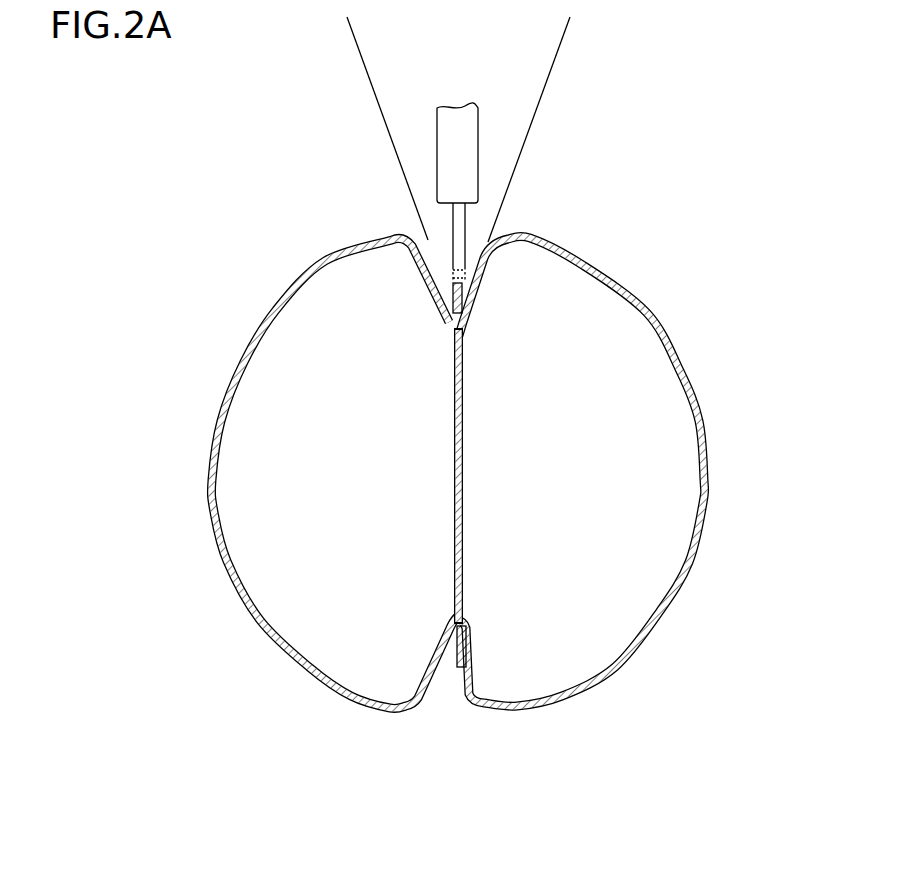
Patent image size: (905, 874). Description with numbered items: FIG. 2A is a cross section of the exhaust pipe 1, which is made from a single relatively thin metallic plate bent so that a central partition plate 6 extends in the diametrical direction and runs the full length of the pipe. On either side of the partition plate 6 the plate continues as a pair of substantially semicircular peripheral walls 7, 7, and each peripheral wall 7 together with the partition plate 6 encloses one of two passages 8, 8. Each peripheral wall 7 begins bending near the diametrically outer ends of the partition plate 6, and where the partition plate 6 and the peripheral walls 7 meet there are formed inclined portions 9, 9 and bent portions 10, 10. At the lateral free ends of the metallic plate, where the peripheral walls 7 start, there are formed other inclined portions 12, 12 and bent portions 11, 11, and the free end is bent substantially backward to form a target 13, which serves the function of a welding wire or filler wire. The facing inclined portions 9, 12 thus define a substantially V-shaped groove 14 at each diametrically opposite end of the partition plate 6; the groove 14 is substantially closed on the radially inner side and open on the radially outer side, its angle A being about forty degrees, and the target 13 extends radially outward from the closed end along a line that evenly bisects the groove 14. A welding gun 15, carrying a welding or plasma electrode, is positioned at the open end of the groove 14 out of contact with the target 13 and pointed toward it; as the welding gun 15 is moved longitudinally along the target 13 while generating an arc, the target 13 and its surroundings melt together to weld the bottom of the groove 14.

The exhaust pipe 1 is at (672, 220).
The partition plate 6 is at (463, 477).
The peripheral wall 7 is at (262, 317).
The passage 8 is at (342, 518).
The inclined portion 9 is at (485, 277).
The bent portion 10 is at (507, 232).
The bent portion 11 is at (413, 233).
The inclined portion 12 is at (432, 273).
The target 13 is at (440, 302).
The V-shaped groove 14 is at (467, 277).
The welding gun 15 is at (475, 108).
The angle of the V-shaped groove A is at (360, 42).